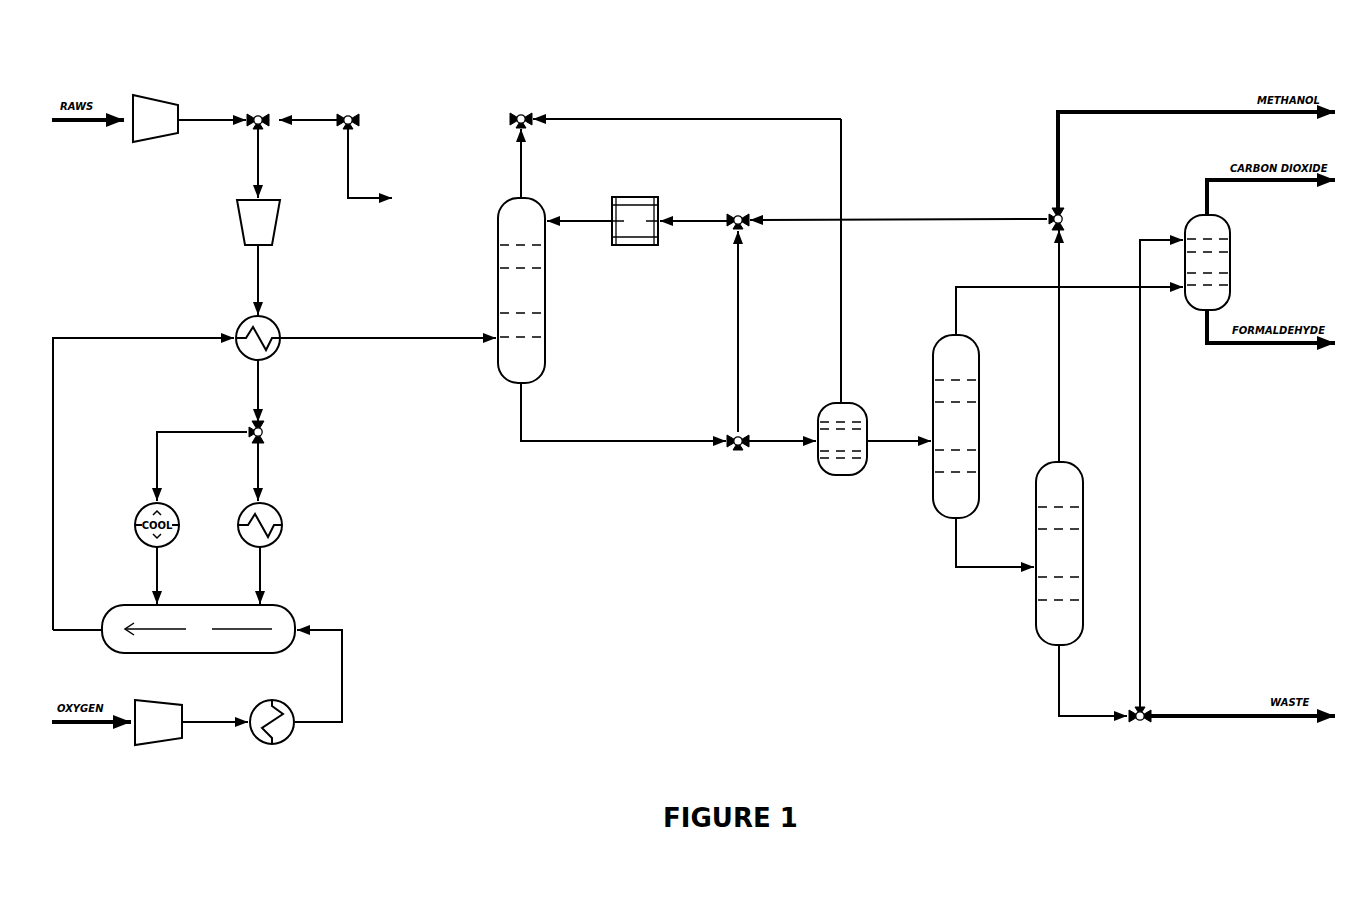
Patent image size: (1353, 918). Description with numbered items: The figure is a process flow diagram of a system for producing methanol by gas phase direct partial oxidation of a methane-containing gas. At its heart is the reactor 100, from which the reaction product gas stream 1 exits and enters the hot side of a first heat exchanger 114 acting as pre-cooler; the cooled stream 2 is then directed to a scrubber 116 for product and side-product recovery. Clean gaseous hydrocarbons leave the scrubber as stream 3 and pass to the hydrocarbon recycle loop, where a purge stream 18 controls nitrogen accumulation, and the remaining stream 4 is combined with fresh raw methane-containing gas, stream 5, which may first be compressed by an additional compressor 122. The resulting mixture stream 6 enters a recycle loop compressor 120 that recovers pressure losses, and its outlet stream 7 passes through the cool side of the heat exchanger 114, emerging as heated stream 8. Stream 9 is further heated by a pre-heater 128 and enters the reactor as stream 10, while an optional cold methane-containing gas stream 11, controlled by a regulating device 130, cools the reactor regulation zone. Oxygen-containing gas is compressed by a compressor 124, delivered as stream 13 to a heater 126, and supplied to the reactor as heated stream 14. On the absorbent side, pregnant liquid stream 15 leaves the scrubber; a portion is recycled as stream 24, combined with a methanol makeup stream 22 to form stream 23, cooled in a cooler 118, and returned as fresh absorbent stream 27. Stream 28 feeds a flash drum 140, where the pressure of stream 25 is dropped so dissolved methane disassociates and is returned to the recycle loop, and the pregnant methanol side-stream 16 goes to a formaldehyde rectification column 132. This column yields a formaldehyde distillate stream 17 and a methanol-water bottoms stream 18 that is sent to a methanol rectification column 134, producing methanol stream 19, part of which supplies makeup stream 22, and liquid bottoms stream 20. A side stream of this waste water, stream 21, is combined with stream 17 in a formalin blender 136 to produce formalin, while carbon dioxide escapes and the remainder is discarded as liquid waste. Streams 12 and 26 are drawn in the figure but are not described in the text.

The reactor 100 is at (174, 629).
The first heat exchanger 114 is at (258, 338).
The scrubber 116 is at (521, 290).
The cooler 118 is at (635, 221).
The recycle loop compressor 120 is at (258, 222).
The additional compressor 122 is at (155, 118).
The compressor 124 is at (158, 722).
The heater 126 is at (272, 722).
The pre-heater 128 is at (260, 525).
The regulating device 130 is at (269, 432).
The formaldehyde rectification column 132 is at (956, 426).
The methanol rectification column 134 is at (1059, 553).
The formalin blender 136 is at (1207, 262).
The flash drum 140 is at (842, 439).
The reaction product gas stream 1 is at (143, 476).
The cooled reaction product stream 2 is at (388, 330).
The clean gaseous hydrocarbon stream 3 is at (513, 163).
The recycle gas stream 4 is at (308, 110).
The raw methane-containing gas stream 5 is at (212, 110).
The mixture stream 6 is at (250, 163).
The compressor outlet stream 7 is at (250, 280).
The heated gas stream 8 is at (250, 391).
The stream to pre-heater 9 is at (250, 471).
The heated reactor feed stream 10 is at (251, 575).
The cold methane-containing gas stream 11 is at (193, 466).
The cooled stream to reactor 12 is at (148, 575).
The compressed oxygen-containing gas stream 13 is at (215, 712).
The heated oxygen-containing gas stream 14 is at (318, 676).
The pregnant liquid stream 15 is at (623, 412).
The pregnant methanol stream 16 is at (899, 432).
The formaldehyde distillate stream 17 is at (1069, 302).
The purge stream / bottoms stream 18 is at (682, 348).
The methanol distillate stream 19 is at (1049, 346).
The bottoms stream 20 is at (1084, 680).
The waste water side stream 21 is at (1152, 473).
The methanol makeup stream 22 is at (898, 211).
The combined absorbent stream 23 is at (693, 212).
The recycled pregnant absorbent stream 24 is at (730, 331).
The flash drum outlet stream 25 is at (832, 261).
The recycle gas stream to feed 26 is at (626, 109).
The fresh absorbent stream 27 is at (579, 212).
The flash drum feed stream 28 is at (782, 432).